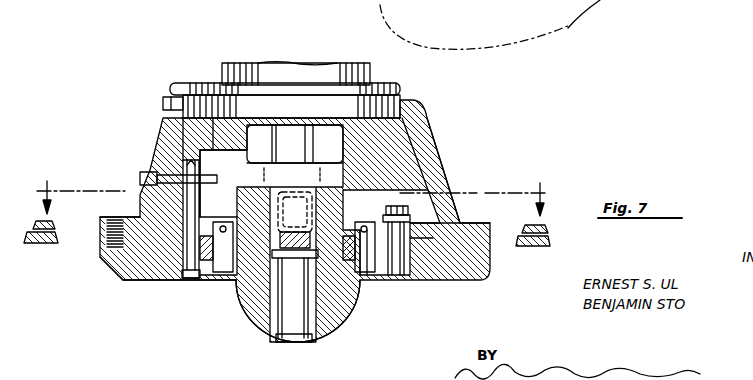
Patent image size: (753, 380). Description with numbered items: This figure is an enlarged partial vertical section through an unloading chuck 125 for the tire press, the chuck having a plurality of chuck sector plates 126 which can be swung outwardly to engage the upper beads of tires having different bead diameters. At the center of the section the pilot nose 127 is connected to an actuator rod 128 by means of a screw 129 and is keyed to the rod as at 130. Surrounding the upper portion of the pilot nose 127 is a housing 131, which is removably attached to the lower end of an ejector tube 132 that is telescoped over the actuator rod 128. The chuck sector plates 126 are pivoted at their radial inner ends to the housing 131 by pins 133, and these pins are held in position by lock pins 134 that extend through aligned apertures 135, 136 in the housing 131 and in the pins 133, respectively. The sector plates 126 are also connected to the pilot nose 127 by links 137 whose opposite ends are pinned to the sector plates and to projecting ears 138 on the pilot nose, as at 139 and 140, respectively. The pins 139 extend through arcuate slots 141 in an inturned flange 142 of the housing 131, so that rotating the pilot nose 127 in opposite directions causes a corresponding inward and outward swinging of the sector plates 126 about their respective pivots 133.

The chuck 125 is at (150, 292).
The chuck sector plates 126 is at (578, 26).
The pilot nose 127 is at (258, 320).
The actuator rod 128 is at (322, 212).
The screw 129 is at (292, 343).
The key 130 is at (340, 168).
The housing 131 is at (165, 108).
The ejector tube 132 is at (222, 68).
The pins 133 is at (152, 214).
The lock pins 134 is at (155, 170).
The apertures 135 is at (162, 127).
The apertures 136 is at (205, 168).
The links 137 is at (234, 283).
The projecting ears 138 is at (238, 220).
The pins 139 is at (418, 224).
The pins 140 is at (216, 280).
The arcuate slots 141 is at (420, 276).
The inturned flange 142 is at (450, 276).